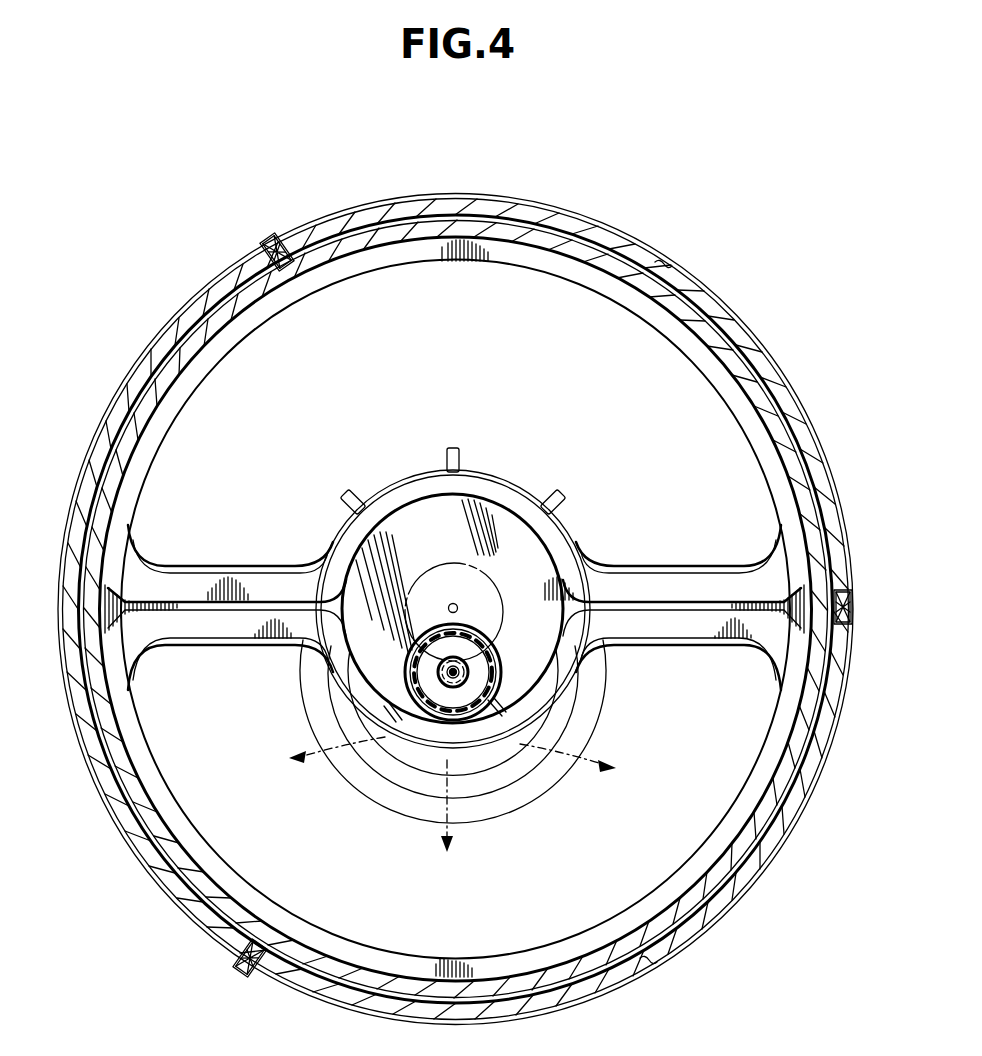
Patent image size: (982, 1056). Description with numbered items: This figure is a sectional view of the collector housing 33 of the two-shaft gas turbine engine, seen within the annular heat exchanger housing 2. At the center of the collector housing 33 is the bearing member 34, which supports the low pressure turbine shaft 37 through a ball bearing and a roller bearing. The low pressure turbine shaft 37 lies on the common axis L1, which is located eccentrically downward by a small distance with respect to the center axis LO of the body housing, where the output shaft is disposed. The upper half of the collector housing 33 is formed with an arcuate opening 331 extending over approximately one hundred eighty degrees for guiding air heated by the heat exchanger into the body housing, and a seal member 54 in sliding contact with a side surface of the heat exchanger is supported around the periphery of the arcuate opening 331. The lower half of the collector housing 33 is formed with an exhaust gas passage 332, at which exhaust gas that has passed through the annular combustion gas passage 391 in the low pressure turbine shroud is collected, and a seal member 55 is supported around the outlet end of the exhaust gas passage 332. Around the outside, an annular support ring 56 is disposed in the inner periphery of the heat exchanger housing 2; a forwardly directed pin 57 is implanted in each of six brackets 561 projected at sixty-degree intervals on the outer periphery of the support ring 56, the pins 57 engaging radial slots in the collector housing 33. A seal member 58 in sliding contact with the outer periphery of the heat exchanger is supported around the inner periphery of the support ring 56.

The heat exchanger housing 2 is at (601, 222).
The collector housing 33 is at (110, 628).
The arcuate opening 331 is at (440, 263).
The exhaust gas passage 332 is at (506, 885).
The bearing member 34 is at (487, 663).
The low pressure turbine shaft 37 is at (470, 673).
The annular combustion gas passage 391 is at (400, 754).
The seal member 54 is at (335, 270).
The seal member 55 is at (259, 905).
The support ring 56 is at (796, 399).
The bracket 561 is at (258, 990).
The pin 57 is at (266, 246).
The seal member 58 is at (760, 390).
The center axis LO is at (459, 606).
The common axis L1 is at (448, 673).